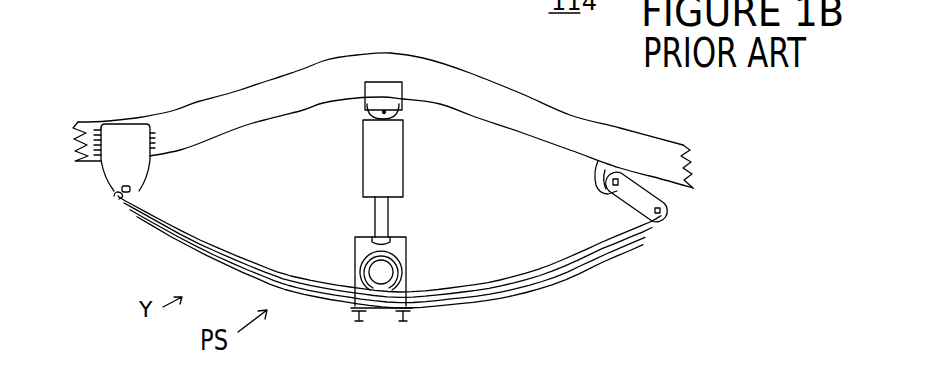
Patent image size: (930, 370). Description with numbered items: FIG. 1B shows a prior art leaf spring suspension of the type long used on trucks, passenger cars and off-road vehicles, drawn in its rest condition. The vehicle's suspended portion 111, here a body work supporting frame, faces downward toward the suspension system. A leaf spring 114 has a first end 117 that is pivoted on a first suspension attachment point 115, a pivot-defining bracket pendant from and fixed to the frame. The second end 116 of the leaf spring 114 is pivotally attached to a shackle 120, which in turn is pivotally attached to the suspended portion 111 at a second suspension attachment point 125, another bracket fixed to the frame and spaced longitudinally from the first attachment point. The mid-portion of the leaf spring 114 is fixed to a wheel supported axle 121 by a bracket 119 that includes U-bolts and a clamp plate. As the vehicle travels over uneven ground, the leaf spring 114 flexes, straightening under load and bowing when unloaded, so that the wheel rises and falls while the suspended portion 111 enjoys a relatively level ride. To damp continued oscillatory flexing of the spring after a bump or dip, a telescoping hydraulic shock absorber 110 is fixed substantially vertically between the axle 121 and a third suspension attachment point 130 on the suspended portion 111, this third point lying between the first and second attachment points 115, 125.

The shock absorber 110 is at (528, 203).
The suspended portion 111 is at (255, 108).
The leaf spring 114 is at (517, 293).
The first suspension attachment point 115 is at (121, 191).
The second end 116 is at (649, 231).
The first end 117 is at (130, 205).
The bracket 119 is at (355, 278).
The shackle 120 is at (665, 202).
The axle 121 is at (400, 270).
The second suspension attachment point 125 is at (617, 183).
The third suspension attachment point 130 is at (367, 104).